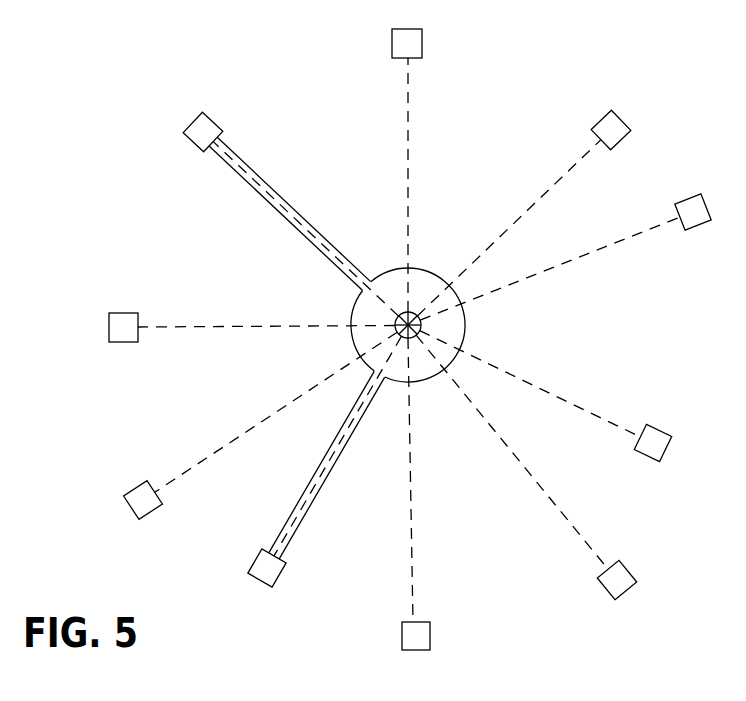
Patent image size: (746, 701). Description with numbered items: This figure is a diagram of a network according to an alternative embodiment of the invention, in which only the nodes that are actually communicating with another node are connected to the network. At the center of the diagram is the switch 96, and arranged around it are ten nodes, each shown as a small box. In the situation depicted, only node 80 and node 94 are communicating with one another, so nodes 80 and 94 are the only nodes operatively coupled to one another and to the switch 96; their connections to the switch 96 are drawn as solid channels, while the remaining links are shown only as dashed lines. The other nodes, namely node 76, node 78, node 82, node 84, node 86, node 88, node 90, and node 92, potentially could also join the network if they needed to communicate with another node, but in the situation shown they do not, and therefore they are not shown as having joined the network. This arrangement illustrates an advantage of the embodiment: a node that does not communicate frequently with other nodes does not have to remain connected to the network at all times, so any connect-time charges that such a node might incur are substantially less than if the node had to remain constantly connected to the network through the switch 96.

The node 76 is at (123, 313).
The node 78 is at (147, 481).
The node 80 is at (272, 588).
The node 82 is at (430, 635).
The node 84 is at (619, 560).
The node 86 is at (661, 425).
The node 88 is at (701, 194).
The node 90 is at (611, 109).
The node 92 is at (422, 38).
The node 94 is at (203, 112).
The switch 96 is at (465, 317).